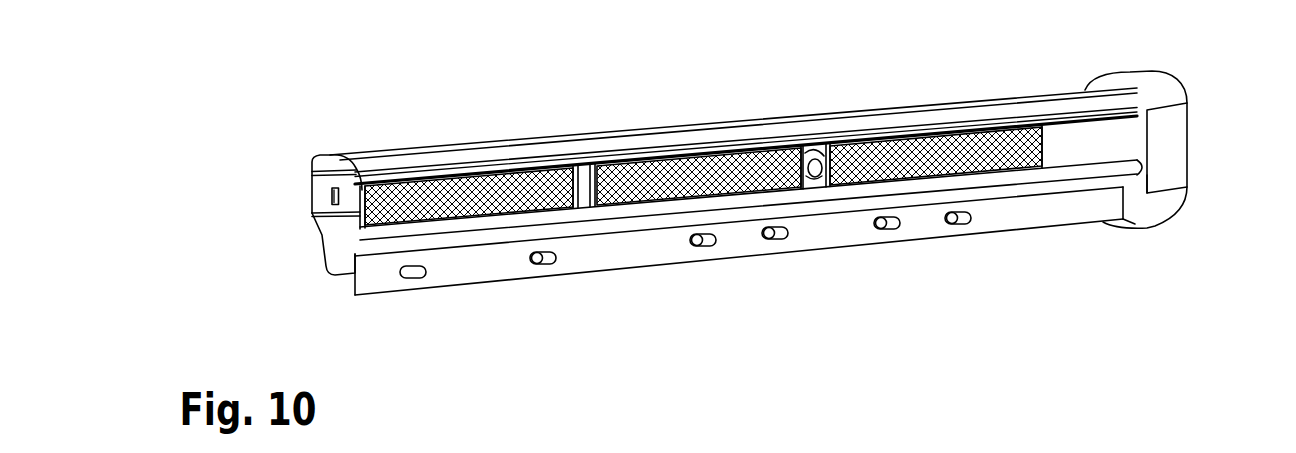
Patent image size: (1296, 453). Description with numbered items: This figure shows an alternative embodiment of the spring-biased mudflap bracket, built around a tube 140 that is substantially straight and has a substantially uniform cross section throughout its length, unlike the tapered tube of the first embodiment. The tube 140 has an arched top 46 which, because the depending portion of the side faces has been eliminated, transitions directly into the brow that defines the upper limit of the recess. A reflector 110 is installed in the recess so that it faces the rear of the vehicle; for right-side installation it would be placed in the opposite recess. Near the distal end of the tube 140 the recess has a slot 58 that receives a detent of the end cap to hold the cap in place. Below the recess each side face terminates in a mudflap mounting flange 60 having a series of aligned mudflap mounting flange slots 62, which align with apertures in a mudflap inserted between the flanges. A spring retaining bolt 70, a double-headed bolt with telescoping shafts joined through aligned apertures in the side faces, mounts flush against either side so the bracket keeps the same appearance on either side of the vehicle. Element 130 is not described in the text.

The arched top 46 is at (1038, 107).
The slot 58 is at (332, 198).
The mudflap mounting flange 60 is at (1030, 220).
The mudflap mounting flange slots 62 is at (960, 226).
The spring retaining bolt 70 is at (822, 186).
The reflector 110 is at (490, 176).
The cap lower portion 130 is at (1137, 202).
The tube 140 is at (563, 145).